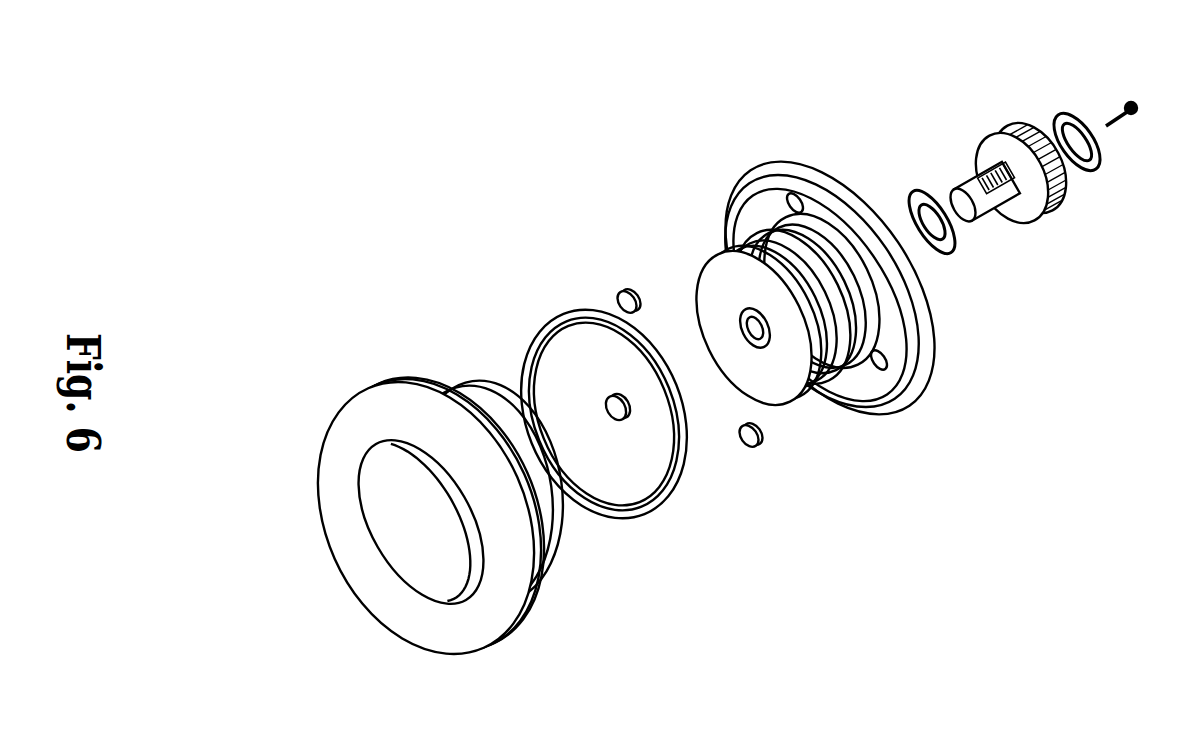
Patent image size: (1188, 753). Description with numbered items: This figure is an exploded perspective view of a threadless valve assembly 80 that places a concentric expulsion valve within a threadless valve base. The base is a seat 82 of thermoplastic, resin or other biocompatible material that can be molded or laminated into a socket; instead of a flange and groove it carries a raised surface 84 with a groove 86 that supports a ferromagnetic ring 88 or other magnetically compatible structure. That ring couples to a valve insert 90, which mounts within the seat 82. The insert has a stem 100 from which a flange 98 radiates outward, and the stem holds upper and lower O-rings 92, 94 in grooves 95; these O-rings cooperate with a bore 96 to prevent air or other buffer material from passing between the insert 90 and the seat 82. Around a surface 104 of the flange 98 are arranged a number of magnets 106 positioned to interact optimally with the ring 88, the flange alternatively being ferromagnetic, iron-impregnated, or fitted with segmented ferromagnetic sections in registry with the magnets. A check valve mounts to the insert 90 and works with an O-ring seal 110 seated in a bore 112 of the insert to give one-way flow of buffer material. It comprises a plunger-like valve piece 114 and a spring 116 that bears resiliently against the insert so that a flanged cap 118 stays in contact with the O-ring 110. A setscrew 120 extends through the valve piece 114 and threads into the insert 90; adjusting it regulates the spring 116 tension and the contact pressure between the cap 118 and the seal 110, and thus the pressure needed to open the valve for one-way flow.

The threadless valve assembly 80 is at (323, 113).
The seat 82 is at (425, 499).
The raised surface 84 is at (435, 372).
The groove 86 is at (489, 388).
The ferromagnetic ring 88 is at (649, 522).
The valve insert 90 is at (724, 295).
The upper O-ring 92 is at (778, 223).
The lower O-ring 94 is at (738, 237).
The grooves 95 is at (857, 362).
The bore 96 is at (455, 505).
The flange 98 is at (799, 175).
The stem 100 is at (688, 362).
The surface 104 is at (784, 203).
The magnets 106 is at (632, 316).
The O-ring seal 110 is at (916, 190).
The bore 112 is at (750, 322).
The valve piece 114 is at (1056, 182).
The spring 116 is at (1005, 196).
The flanged cap 118 is at (1070, 178).
The setscrew 120 is at (1124, 118).